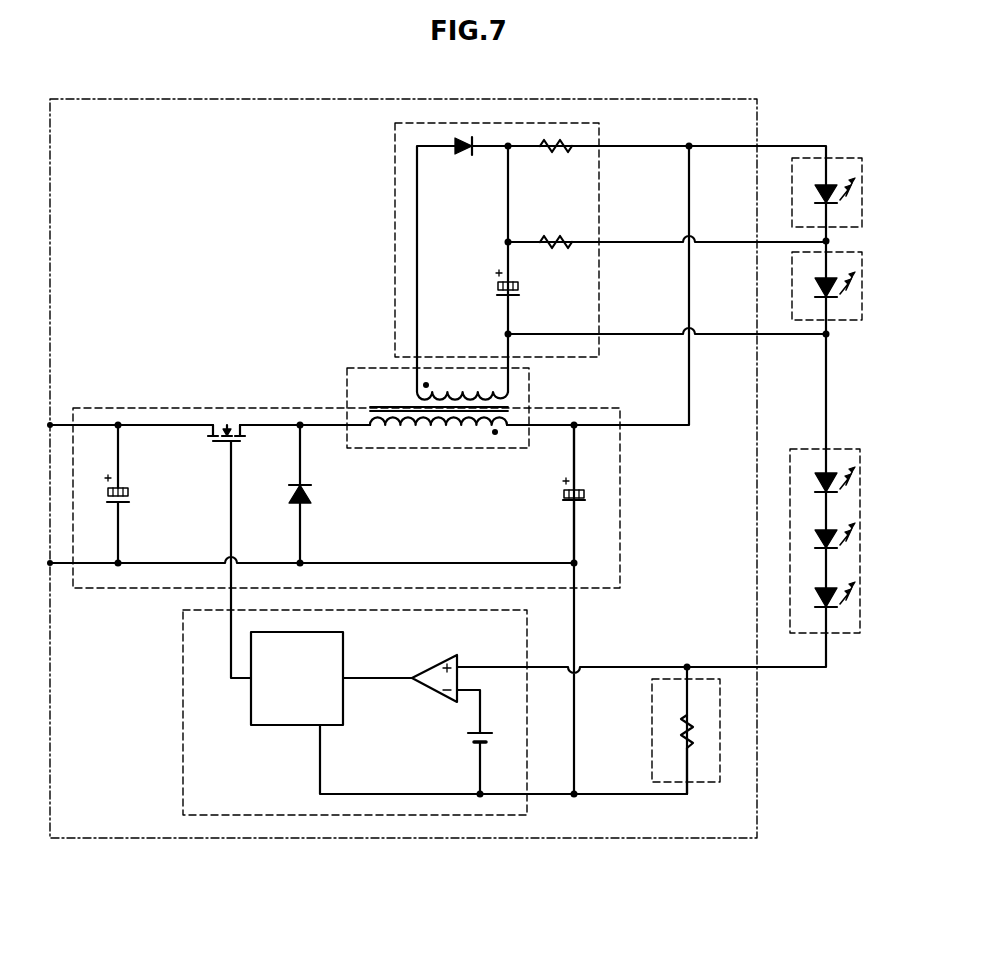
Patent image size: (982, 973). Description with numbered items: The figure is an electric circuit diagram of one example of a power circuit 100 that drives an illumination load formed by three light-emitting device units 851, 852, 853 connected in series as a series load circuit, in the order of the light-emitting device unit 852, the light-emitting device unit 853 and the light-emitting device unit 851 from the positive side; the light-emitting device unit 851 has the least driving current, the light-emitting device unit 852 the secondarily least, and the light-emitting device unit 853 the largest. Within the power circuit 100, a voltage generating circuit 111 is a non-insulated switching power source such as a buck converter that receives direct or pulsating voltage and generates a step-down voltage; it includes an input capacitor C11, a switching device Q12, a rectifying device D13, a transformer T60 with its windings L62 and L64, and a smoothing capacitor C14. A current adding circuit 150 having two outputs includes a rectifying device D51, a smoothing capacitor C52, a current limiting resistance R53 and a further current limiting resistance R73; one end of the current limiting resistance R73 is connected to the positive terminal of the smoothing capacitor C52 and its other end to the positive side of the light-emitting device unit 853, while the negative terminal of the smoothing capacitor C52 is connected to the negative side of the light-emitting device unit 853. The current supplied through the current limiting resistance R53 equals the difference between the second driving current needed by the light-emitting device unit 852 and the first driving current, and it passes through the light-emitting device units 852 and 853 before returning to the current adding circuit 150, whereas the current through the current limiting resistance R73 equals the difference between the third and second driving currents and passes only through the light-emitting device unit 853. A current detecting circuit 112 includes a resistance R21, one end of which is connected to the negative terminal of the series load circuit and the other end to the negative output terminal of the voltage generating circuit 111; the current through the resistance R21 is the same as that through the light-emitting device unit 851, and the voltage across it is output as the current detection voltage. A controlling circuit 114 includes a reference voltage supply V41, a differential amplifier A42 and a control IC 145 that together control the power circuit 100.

The power circuit 100 is at (756, 104).
The current adding circuit 150 is at (602, 128).
The voltage generating circuit 111 is at (620, 418).
The current detecting circuit 112 is at (720, 770).
The controlling circuit 114 is at (176, 617).
The control IC 145 is at (341, 641).
The light-emitting device unit 851 is at (860, 633).
The light-emitting device unit 852 is at (859, 170).
The light-emitting device unit 853 is at (862, 320).
The input capacitor C11 is at (144, 473).
The switching device Q12 is at (223, 416).
The rectifying device D13 is at (310, 497).
The smoothing capacitor C14 is at (570, 500).
The transformer T60 is at (427, 403).
The secondary winding L62 is at (466, 387).
The primary winding L64 is at (432, 446).
The rectifying device D51 is at (462, 158).
The current limiting resistance R53 is at (552, 156).
The current limiting resistance R73 is at (552, 252).
The smoothing capacitor C52 is at (499, 295).
The differential amplifier A42 is at (438, 662).
The reference voltage supply V41 is at (476, 748).
The resistance R21 is at (672, 722).